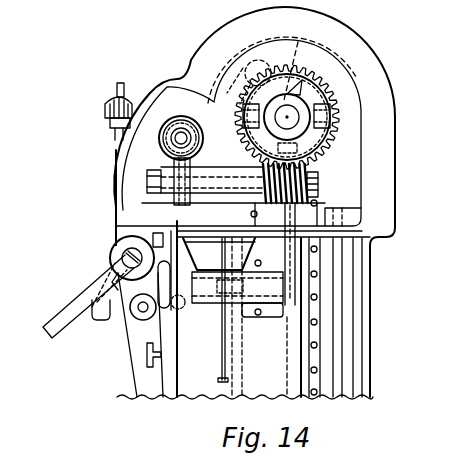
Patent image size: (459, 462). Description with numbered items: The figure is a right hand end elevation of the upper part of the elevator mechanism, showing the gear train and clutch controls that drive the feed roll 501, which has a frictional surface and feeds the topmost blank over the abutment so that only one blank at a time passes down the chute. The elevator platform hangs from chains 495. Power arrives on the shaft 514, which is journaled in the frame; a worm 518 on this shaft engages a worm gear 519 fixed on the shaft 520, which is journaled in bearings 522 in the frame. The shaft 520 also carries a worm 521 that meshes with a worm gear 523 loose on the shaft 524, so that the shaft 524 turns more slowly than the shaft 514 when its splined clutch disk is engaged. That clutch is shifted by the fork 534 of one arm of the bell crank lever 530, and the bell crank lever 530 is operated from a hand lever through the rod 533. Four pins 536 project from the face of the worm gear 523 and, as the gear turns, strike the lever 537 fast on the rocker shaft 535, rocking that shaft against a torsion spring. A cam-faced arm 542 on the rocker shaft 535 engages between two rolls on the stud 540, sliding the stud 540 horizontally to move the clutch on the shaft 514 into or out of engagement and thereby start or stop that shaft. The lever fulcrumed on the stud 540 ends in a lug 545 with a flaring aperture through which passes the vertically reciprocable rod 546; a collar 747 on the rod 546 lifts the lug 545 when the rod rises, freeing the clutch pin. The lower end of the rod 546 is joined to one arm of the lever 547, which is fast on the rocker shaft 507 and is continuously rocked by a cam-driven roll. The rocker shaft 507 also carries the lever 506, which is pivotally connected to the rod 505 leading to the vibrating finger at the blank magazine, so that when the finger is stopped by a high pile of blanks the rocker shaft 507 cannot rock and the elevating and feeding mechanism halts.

The feed roll 501 is at (174, 79).
The stud 540 is at (187, 80).
The cam-faced arm 542 is at (245, 64).
The rocker shaft 535 is at (272, 62).
The lever 537 is at (298, 42).
The pins 536 is at (328, 150).
The shaft 524 is at (290, 116).
The worm gear 523 is at (312, 111).
The fork 534 is at (332, 133).
The worm 521 is at (319, 182).
The shaft 514 is at (187, 126).
The worm 518 is at (160, 144).
The worm gear 519 is at (203, 152).
The bearings 522 is at (204, 197).
The shaft 520 is at (233, 223).
The lug 545 is at (104, 106).
The collar 747 is at (127, 126).
The rod 546 is at (116, 217).
The rod 505 is at (79, 300).
The lever 547 is at (108, 320).
The lever 506 is at (120, 318).
The rocker shaft 507 is at (140, 316).
The bell crank lever 530 is at (283, 239).
The rod 533 is at (222, 350).
The chains 495 is at (313, 352).